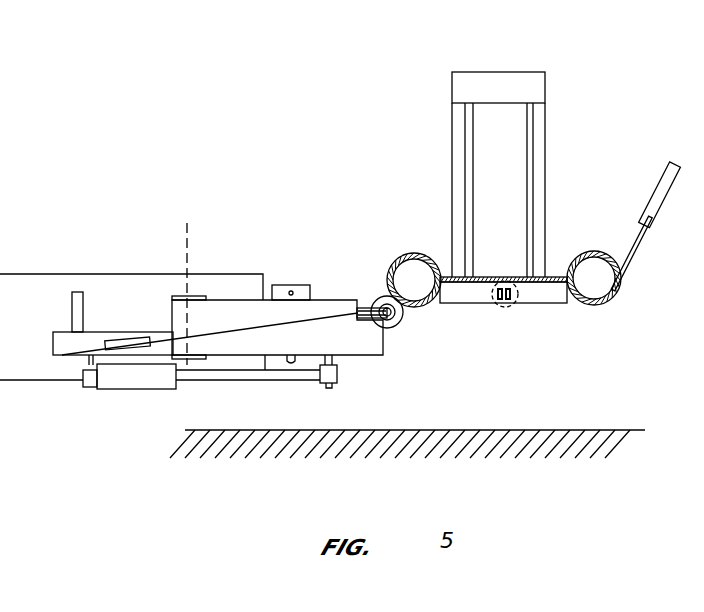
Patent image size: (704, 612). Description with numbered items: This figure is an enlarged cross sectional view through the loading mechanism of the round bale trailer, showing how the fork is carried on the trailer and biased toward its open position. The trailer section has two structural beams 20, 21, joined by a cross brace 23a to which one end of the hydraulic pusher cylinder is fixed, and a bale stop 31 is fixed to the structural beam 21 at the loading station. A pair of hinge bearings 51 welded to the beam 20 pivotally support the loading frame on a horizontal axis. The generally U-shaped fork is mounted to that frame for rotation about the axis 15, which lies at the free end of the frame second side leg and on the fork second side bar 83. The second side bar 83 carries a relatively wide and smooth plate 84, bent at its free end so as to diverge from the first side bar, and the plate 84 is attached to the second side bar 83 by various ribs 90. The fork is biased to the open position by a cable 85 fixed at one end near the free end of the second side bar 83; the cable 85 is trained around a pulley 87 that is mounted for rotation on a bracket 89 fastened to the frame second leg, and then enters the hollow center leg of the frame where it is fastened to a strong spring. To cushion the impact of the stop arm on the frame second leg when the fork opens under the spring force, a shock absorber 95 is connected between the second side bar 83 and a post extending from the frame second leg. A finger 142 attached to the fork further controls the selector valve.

The axis 15 is at (188, 237).
The structural beam 20 is at (425, 302).
The structural beam 21 is at (618, 293).
The cross brace 23a is at (533, 298).
The bale stop 31 is at (651, 200).
The hinge bearings 51 is at (392, 328).
The second side bar 83 is at (95, 337).
The plate 84 is at (247, 283).
The cable 85 is at (331, 318).
The pulley 87 is at (358, 323).
The bracket 89 is at (367, 307).
The ribs 90 is at (78, 294).
The shock absorber 95 is at (147, 389).
The finger 142 is at (293, 373).